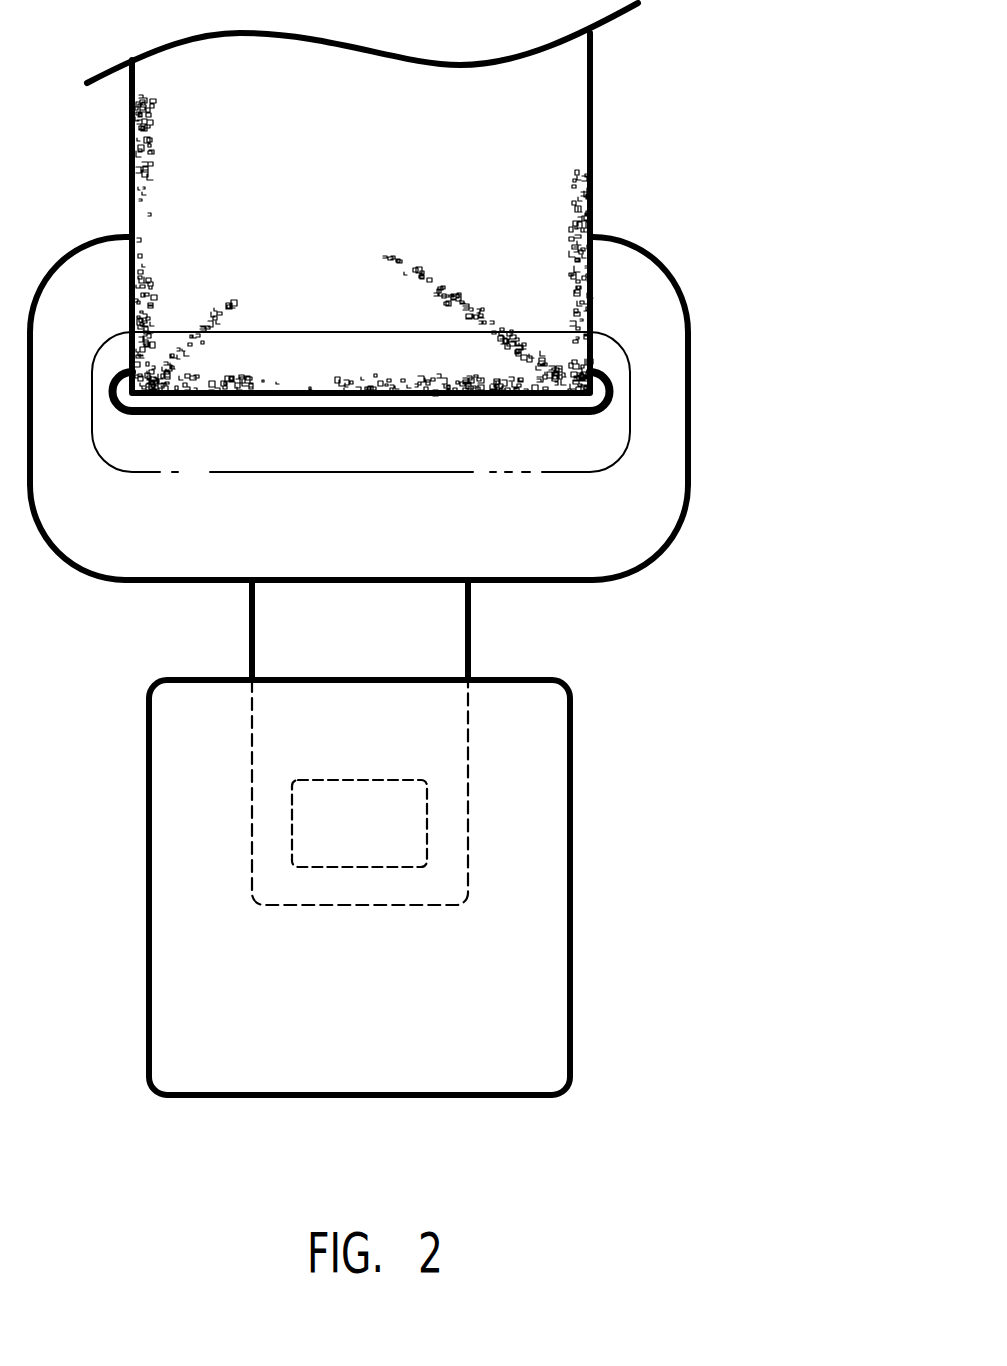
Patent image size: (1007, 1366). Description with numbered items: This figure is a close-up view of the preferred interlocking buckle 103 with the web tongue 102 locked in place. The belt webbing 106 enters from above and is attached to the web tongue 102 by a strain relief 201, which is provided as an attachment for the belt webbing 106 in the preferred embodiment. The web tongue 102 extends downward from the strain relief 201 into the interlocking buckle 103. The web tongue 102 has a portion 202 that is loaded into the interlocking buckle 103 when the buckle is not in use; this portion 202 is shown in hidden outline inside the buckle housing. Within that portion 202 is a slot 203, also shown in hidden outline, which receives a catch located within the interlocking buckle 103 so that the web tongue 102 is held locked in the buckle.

The belt webbing 106 is at (540, 155).
The strain relief 201 is at (643, 418).
The web tongue 102 is at (447, 635).
The interlocking buckle 103 is at (528, 1037).
The portion 202 is at (453, 832).
The slot 203 is at (382, 855).